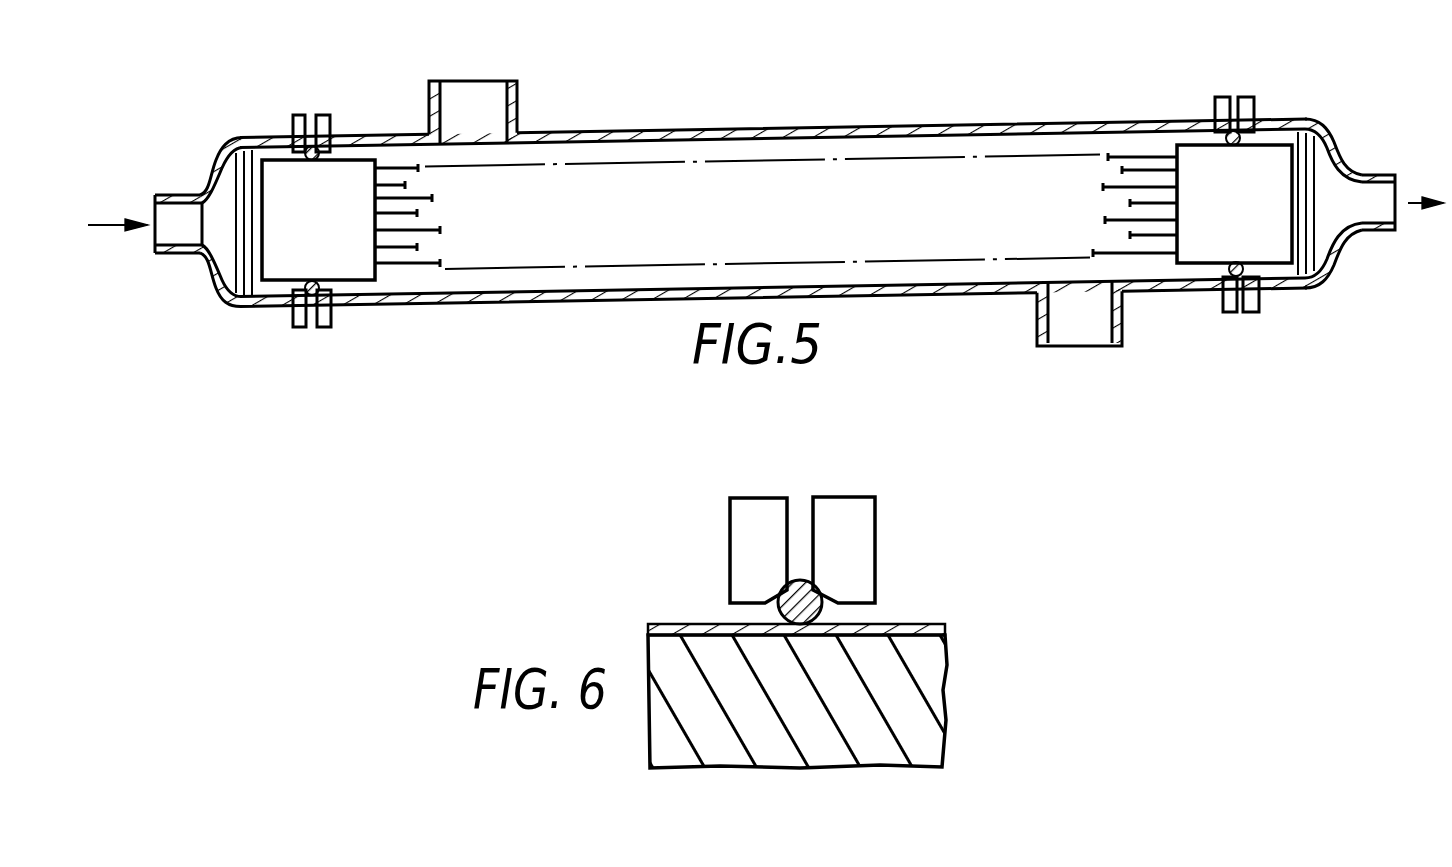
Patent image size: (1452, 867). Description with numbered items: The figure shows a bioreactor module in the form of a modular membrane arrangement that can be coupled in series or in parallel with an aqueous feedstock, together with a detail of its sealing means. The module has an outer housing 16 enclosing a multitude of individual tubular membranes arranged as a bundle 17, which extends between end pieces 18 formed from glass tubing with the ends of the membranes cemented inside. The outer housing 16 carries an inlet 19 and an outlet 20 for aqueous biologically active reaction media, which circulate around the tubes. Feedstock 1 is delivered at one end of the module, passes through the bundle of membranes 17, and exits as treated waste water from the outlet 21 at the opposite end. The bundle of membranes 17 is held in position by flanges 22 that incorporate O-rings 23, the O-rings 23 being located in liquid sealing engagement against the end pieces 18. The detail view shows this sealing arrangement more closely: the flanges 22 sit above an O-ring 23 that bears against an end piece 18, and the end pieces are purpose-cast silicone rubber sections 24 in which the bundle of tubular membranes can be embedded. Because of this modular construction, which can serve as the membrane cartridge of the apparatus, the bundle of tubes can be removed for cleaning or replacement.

In FIG. 5, the feedstock 1 is at (103, 222).
In FIG. 5, the outer housing 16 is at (802, 128).
In FIG. 5, the bundle of tubular membranes 17 is at (422, 268).
In FIG. 5, the end pieces 18 is at (273, 170).
In FIG. 6, the end pieces 18 is at (930, 627).
In FIG. 5, the inlet 19 is at (486, 98).
In FIG. 5, the outlet 20 is at (1083, 328).
In FIG. 5, the outlet 21 is at (1380, 202).
In FIG. 5, the flanges 22 is at (1253, 100).
In FIG. 6, the flanges 22 is at (860, 518).
In FIG. 5, the O-rings 23 is at (292, 283).
In FIG. 6, the O-rings 23 is at (777, 615).
In FIG. 6, the silicone rubber sections 24 is at (928, 673).